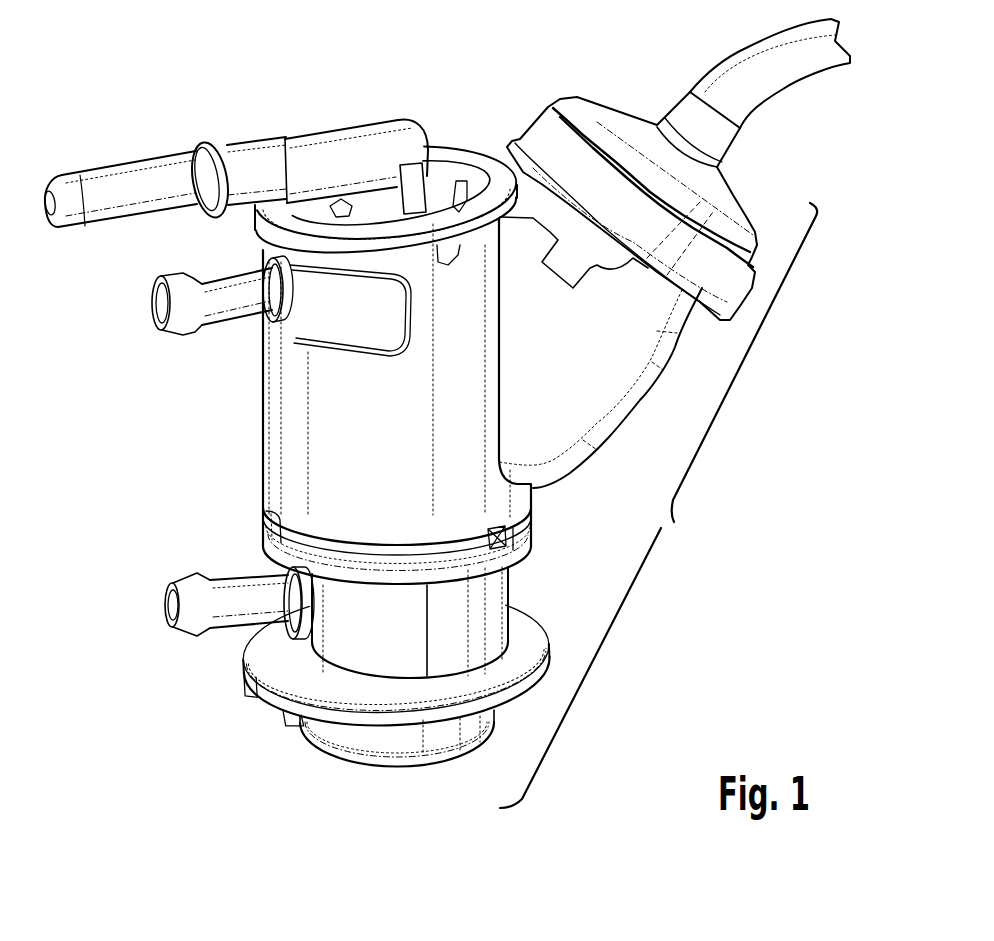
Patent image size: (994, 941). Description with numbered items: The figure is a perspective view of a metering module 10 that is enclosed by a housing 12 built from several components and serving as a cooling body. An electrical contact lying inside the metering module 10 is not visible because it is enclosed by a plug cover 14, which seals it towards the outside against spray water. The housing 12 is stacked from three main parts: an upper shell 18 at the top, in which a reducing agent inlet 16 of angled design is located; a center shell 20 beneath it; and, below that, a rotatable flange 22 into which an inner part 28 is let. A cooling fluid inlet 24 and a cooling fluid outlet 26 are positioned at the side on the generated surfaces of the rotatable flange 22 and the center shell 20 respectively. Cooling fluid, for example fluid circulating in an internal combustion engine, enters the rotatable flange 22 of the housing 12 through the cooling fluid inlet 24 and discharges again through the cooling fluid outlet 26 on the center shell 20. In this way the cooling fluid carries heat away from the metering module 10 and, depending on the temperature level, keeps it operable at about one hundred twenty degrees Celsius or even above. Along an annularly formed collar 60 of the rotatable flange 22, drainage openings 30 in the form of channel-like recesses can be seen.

The metering module 10 is at (112, 425).
The housing 12 is at (674, 522).
The plug cover 14 is at (610, 130).
The reducing agent inlet 16 is at (124, 184).
The upper shell 18 is at (375, 242).
The center shell 20 is at (341, 476).
The rotatable flange 22 is at (370, 655).
The cooling fluid inlet 24 is at (182, 629).
The cooling fluid outlet 26 is at (178, 283).
The inner part 28 is at (384, 735).
The drainage openings 30 is at (287, 537).
The collar 60 is at (472, 560).